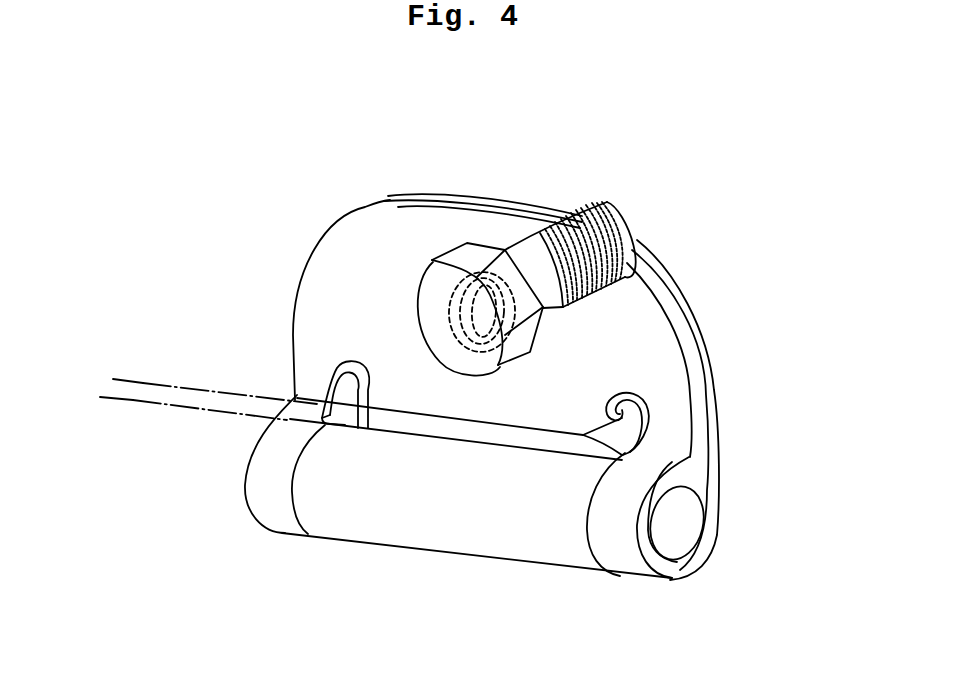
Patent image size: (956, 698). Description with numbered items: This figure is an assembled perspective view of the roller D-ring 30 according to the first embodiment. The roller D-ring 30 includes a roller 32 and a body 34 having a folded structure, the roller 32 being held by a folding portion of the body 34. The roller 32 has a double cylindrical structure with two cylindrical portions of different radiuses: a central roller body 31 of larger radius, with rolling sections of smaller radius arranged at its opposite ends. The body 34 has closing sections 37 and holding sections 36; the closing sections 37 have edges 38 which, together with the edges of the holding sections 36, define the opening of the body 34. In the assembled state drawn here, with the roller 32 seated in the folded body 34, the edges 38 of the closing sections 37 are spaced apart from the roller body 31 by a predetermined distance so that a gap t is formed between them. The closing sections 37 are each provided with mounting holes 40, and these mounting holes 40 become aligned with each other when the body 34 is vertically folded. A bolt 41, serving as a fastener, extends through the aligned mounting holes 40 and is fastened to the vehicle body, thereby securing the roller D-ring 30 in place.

The roller D-ring 30 is at (453, 393).
The roller body 31 is at (530, 538).
The roller 32 is at (458, 526).
The body 34 is at (700, 327).
The holding sections 36 is at (276, 507).
The closing sections 37 is at (374, 275).
The edges 38 is at (615, 453).
The mounting holes 40 is at (493, 270).
The bolt 41 is at (437, 285).
The gap t is at (132, 403).